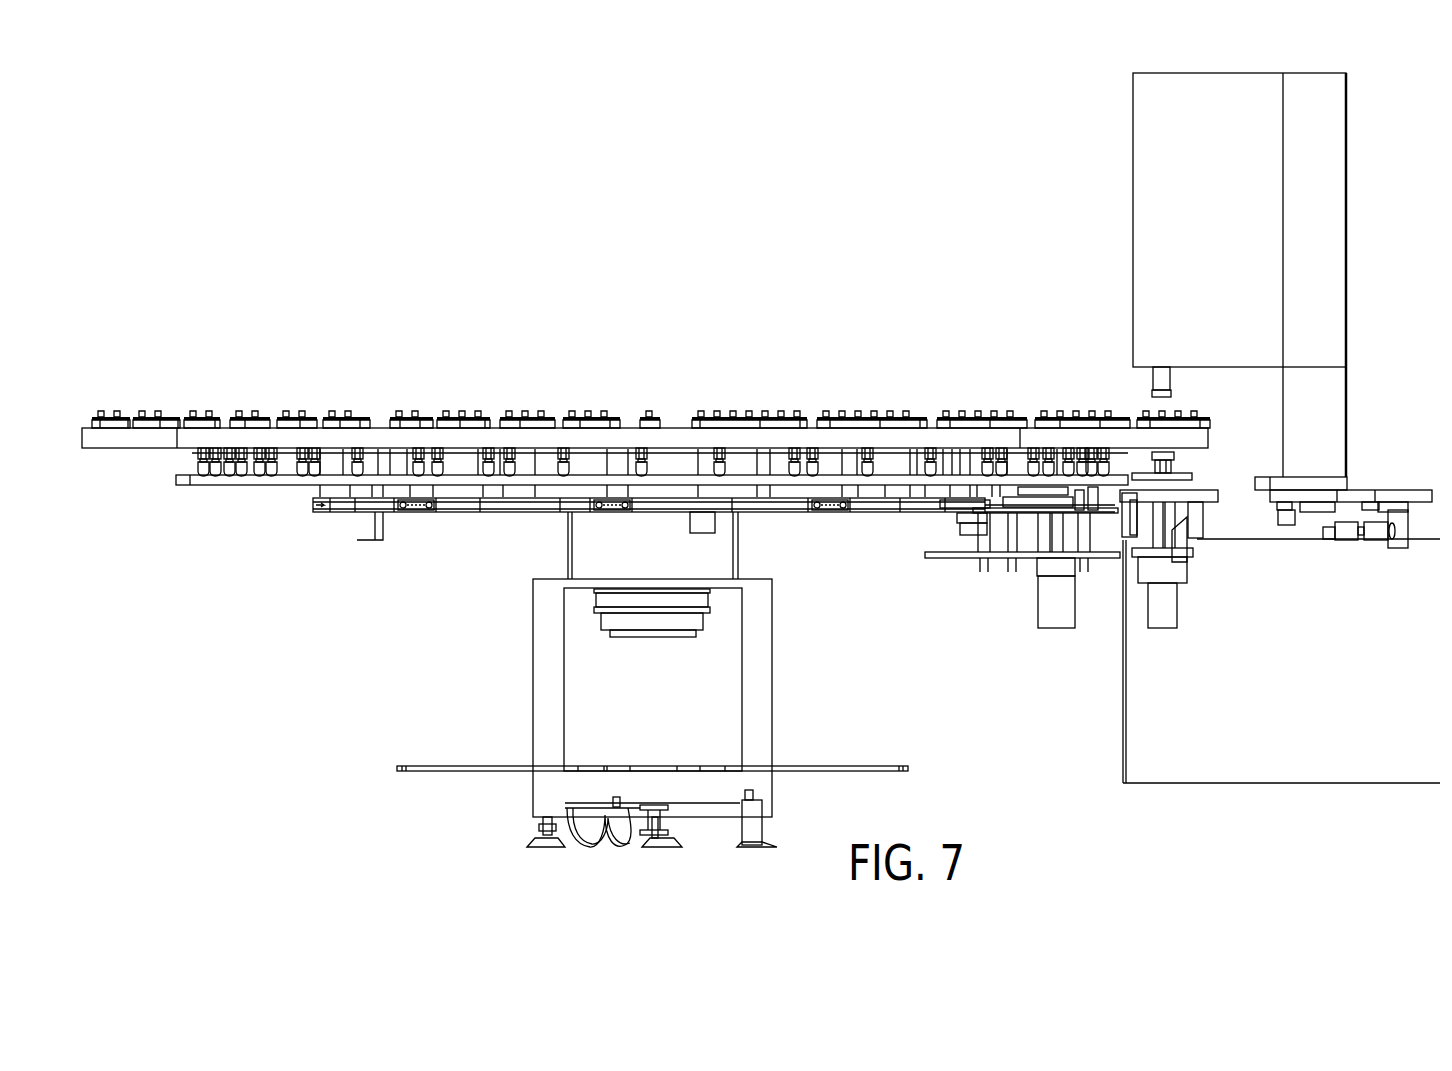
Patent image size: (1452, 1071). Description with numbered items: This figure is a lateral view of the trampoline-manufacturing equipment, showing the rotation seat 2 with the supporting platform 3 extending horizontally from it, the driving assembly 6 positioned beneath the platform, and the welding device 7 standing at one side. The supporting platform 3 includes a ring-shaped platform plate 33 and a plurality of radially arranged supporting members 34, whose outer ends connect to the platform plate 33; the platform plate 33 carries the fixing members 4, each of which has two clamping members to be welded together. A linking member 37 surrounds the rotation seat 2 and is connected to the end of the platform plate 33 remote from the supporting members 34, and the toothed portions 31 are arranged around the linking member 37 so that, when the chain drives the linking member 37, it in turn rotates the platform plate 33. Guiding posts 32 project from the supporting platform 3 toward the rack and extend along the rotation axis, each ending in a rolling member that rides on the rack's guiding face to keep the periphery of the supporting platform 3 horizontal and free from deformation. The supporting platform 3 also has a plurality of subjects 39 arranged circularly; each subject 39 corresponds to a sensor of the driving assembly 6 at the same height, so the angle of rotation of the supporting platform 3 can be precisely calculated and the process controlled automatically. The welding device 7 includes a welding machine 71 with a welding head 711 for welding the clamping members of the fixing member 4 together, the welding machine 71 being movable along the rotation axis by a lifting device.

The rotation seat 2 is at (793, 690).
The supporting platform 3 is at (455, 376).
The fixing members 4 is at (1055, 418).
The driving assembly 6 is at (988, 589).
The welding device 7 is at (1248, 310).
The toothed portions 31 is at (600, 507).
The guiding posts 32 is at (645, 453).
The platform plate 33 is at (867, 440).
The supporting members 34 is at (953, 428).
The linking member 37 is at (470, 507).
The subjects 39 is at (364, 541).
The welding machine 71 is at (1182, 163).
The welding head 711 is at (1148, 391).